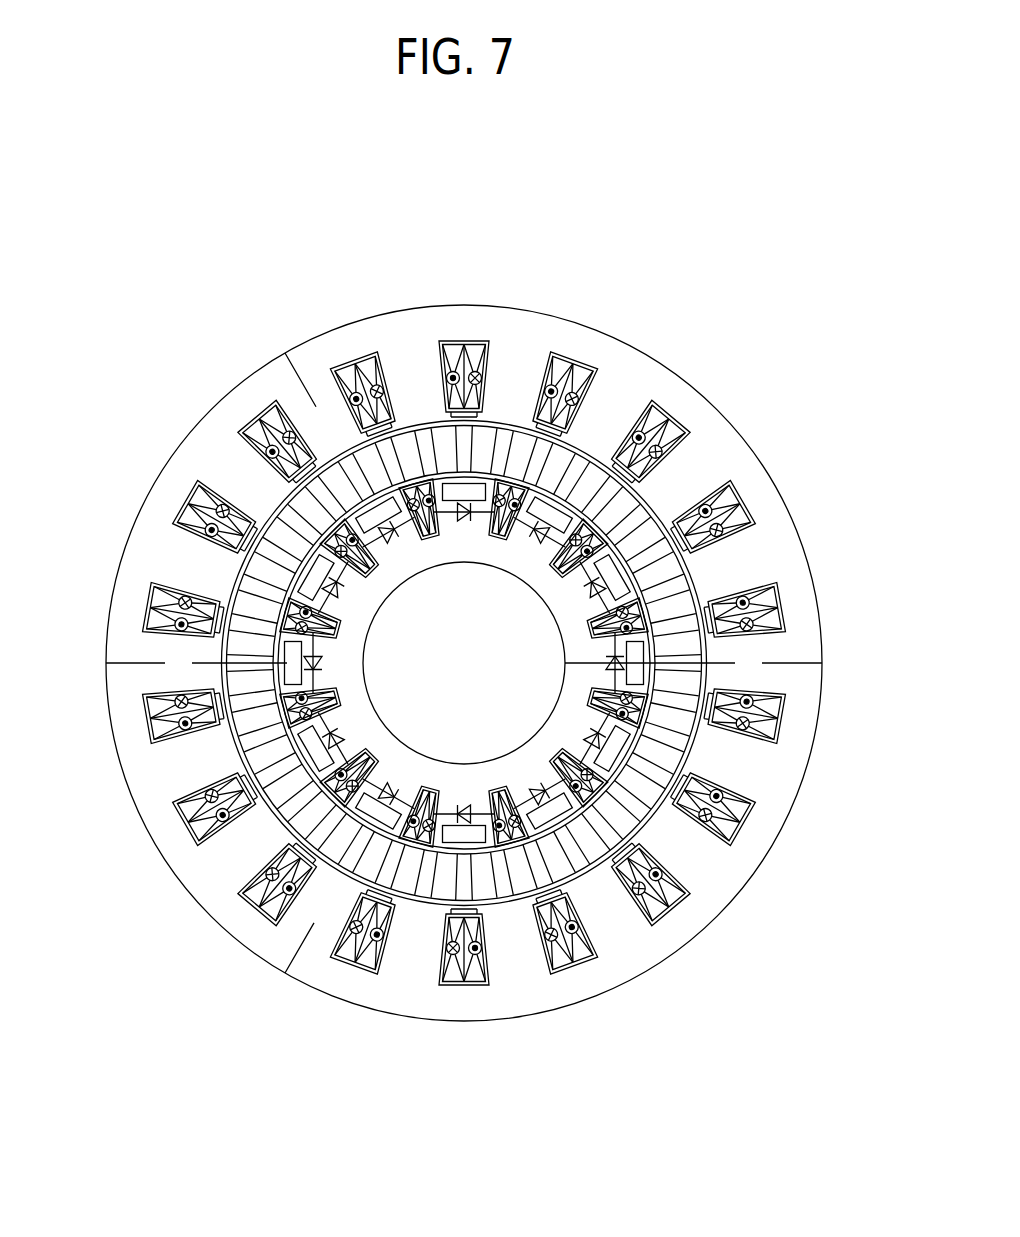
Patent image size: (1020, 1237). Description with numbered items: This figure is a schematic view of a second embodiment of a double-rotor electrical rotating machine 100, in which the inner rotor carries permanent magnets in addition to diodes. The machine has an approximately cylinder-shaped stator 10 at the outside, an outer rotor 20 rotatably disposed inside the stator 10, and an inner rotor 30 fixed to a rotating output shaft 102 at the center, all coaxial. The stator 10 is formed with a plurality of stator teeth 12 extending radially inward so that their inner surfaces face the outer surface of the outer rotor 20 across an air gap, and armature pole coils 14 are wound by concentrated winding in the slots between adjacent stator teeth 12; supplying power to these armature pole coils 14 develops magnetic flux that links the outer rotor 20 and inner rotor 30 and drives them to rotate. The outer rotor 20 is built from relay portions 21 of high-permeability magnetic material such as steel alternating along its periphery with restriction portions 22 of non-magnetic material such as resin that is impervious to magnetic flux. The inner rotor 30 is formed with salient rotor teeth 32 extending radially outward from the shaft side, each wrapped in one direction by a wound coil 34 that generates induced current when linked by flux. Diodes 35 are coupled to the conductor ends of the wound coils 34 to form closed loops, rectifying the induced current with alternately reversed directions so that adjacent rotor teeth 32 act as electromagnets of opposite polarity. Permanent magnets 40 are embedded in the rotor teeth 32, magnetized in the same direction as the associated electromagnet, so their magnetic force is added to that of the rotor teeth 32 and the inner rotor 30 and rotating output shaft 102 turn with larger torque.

The electrical rotating machine 100 is at (630, 290).
The rotating output shaft 102 is at (484, 674).
The stator 10 is at (211, 448).
The stator teeth 12 is at (170, 563).
The armature pole coils 14 is at (170, 630).
The outer rotor 20 is at (571, 856).
The relay portions 21 is at (618, 830).
The restriction portions 22 is at (628, 812).
The inner rotor 30 is at (359, 674).
The rotor teeth 32 is at (588, 600).
The wound coils 34 is at (440, 520).
The diodes 35 is at (532, 788).
The permanent magnets 40 is at (473, 833).